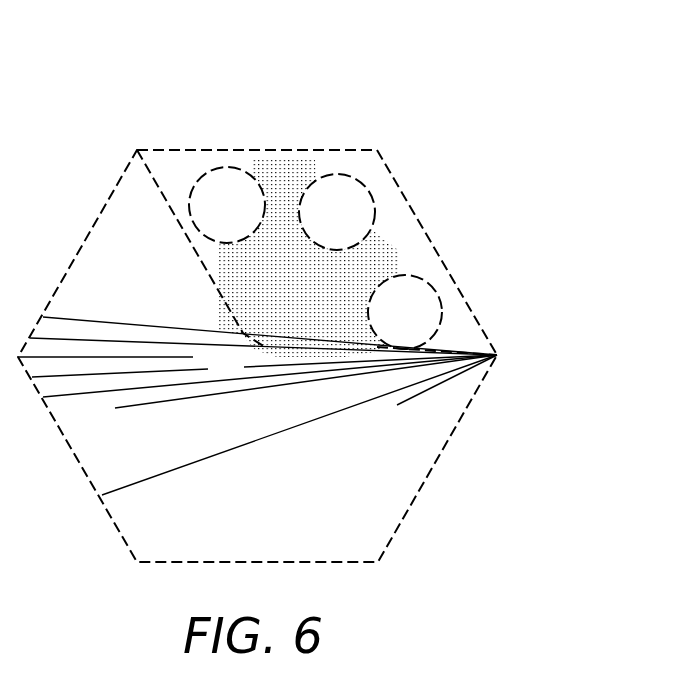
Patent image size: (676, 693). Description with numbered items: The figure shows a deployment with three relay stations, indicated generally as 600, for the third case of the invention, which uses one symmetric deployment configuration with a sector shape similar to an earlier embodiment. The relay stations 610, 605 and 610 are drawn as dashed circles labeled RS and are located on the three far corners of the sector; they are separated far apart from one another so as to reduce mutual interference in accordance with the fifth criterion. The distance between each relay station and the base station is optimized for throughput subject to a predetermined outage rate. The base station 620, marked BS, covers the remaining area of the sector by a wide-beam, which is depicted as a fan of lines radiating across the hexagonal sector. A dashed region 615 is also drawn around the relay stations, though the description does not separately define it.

The three relay stations deployment 600 is at (543, 47).
The relay station 605 is at (344, 173).
The relay station 610 is at (232, 168).
The reference signal coverage region 615 is at (237, 300).
The base station 620 is at (229, 384).